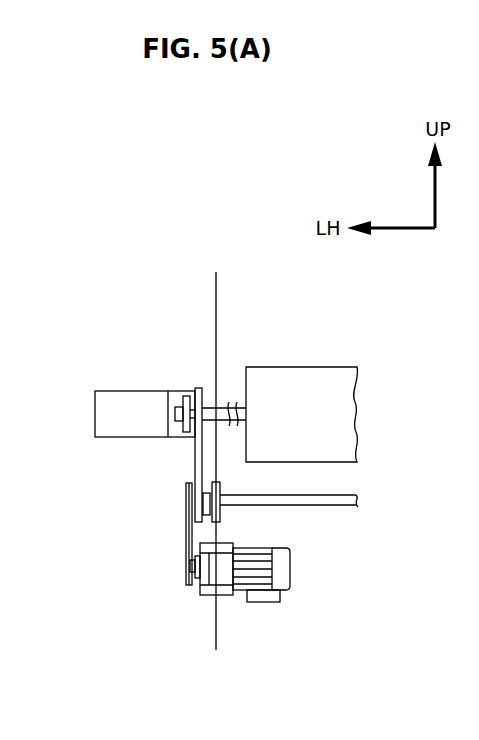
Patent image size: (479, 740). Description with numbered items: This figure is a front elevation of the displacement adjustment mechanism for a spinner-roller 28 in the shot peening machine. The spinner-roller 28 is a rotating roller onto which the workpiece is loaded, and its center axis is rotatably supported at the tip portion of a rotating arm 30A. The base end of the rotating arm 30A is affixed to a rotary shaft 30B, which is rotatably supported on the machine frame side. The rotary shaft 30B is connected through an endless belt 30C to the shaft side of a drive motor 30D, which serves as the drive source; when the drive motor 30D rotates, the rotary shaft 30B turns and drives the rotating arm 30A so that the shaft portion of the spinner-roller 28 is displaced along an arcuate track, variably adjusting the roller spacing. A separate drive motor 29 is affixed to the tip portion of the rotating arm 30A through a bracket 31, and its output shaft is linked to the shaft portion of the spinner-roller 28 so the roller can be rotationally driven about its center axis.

The spinner-roller 28 is at (299, 366).
The drive motor 29 is at (128, 388).
The bracket 31 is at (180, 394).
The rotating arm 30A is at (195, 455).
The rotary shaft 30B is at (243, 506).
The endless belt 30C is at (186, 528).
The drive motor 30D is at (238, 596).